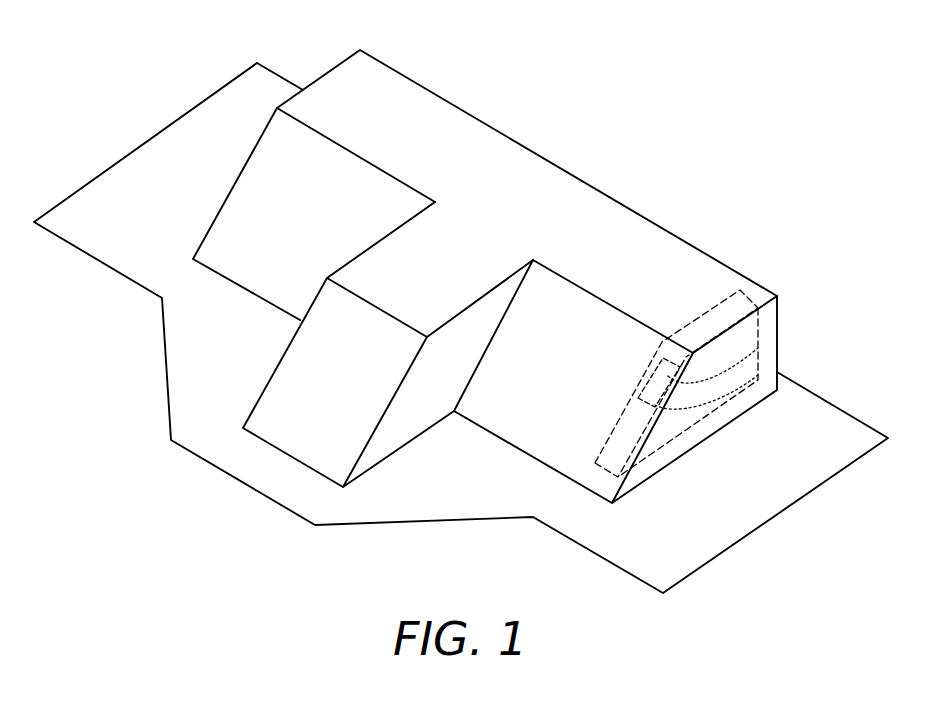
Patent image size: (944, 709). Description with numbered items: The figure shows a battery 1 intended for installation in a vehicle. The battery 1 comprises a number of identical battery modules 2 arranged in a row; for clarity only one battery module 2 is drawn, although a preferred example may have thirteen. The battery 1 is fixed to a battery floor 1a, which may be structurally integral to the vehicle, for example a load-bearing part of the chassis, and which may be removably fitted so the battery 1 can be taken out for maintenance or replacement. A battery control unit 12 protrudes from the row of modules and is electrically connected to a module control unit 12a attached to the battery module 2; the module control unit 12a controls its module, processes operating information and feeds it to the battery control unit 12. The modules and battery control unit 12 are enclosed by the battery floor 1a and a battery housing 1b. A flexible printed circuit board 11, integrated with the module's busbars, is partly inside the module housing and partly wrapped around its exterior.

The battery 1 is at (461, 306).
The battery floor 1a is at (496, 512).
The battery housing 1b is at (376, 70).
The battery module 2 is at (741, 289).
The flexible printed circuit board 11 is at (728, 383).
The battery control unit 12 is at (372, 292).
The module control unit 12a is at (642, 393).